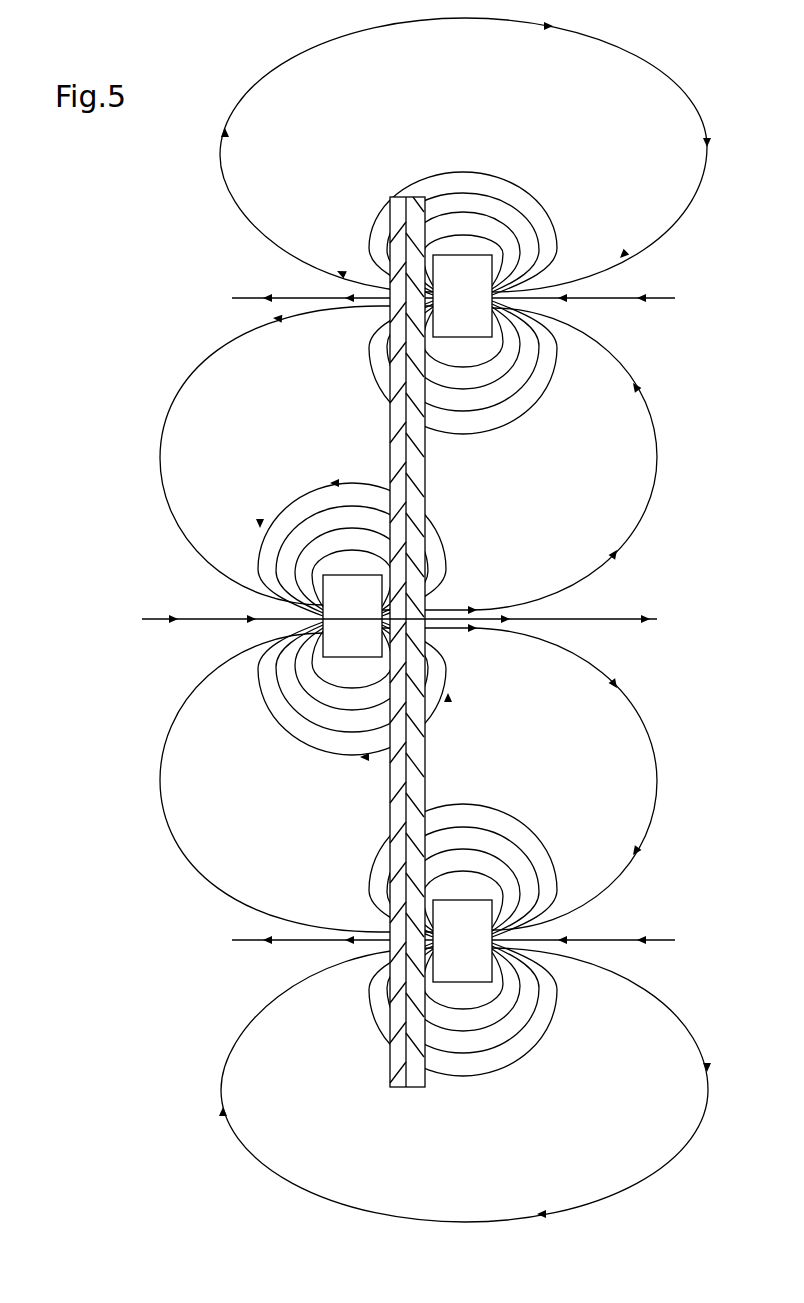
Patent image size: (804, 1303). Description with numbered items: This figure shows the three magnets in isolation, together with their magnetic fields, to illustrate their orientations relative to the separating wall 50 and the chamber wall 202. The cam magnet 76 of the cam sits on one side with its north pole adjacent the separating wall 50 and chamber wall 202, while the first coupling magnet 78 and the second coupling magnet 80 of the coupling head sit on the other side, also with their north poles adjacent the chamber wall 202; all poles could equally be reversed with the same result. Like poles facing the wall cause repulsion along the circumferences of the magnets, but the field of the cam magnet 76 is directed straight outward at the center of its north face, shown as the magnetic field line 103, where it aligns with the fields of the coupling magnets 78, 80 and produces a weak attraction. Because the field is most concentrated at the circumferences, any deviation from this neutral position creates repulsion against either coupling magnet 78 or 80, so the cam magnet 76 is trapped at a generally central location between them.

The separating wall 50 is at (390, 206).
The chamber wall 202 is at (412, 200).
The cam magnet 76 is at (330, 598).
The first coupling magnet 78 is at (484, 263).
The second coupling magnet 80 is at (495, 910).
The magnetic field line 103 is at (607, 622).